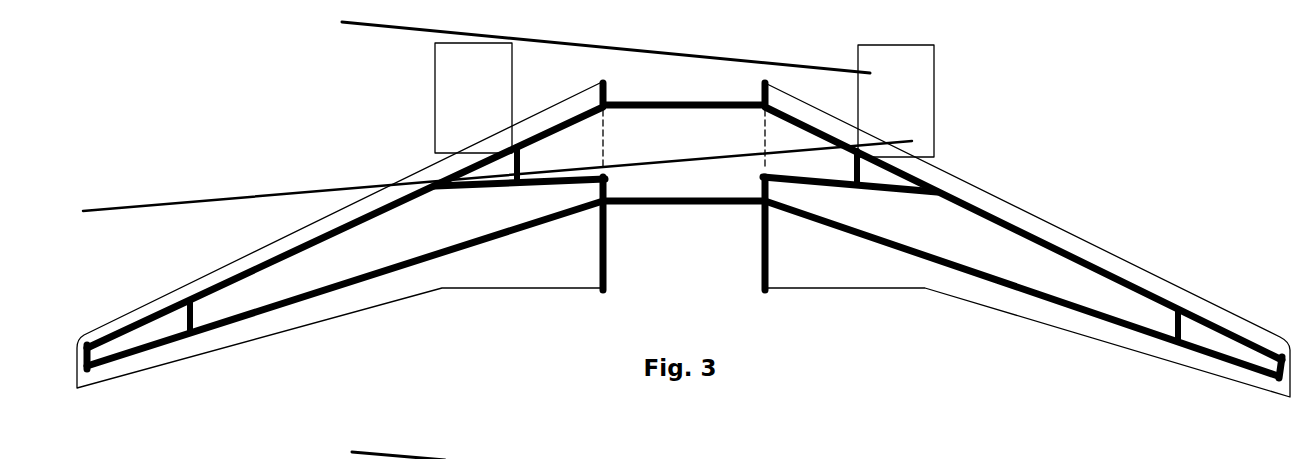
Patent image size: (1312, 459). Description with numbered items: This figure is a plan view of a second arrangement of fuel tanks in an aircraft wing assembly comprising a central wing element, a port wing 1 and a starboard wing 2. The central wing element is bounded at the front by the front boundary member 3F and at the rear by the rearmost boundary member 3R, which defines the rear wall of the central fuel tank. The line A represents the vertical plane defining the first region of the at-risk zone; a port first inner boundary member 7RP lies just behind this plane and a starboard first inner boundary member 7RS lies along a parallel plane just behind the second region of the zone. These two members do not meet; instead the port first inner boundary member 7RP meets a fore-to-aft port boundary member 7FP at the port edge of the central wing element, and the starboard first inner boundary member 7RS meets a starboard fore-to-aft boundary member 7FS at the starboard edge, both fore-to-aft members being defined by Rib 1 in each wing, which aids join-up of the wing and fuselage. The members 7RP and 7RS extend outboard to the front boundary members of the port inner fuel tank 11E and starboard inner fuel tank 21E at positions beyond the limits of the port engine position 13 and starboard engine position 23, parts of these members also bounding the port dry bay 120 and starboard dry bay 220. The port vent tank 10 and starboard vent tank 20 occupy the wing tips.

The port wing 1 is at (340, 318).
The starboard wing 2 is at (1000, 313).
The front boundary member of the central wing element 3F is at (623, 103).
The rearmost boundary member of the central wing element 3R is at (616, 203).
The port vent tank 10 is at (151, 333).
The starboard vent tank 20 is at (1233, 343).
The port inner fuel tank 11E is at (258, 287).
The starboard inner fuel tank 21E is at (1093, 292).
The port dry bay 120 is at (498, 177).
The starboard dry bay 220 is at (892, 174).
The port first inner boundary member 7RP is at (540, 182).
The starboard first inner boundary member 7RS is at (832, 184).
The fore-to-aft port boundary member 7FP is at (600, 199).
The starboard fore-to-aft boundary member 7FS is at (765, 190).
The rib number 1 Rib 1 is at (758, 146).
The port engine position 13 is at (433, 83).
The starboard engine position 23 is at (937, 95).
The line AA A is at (497, 162).